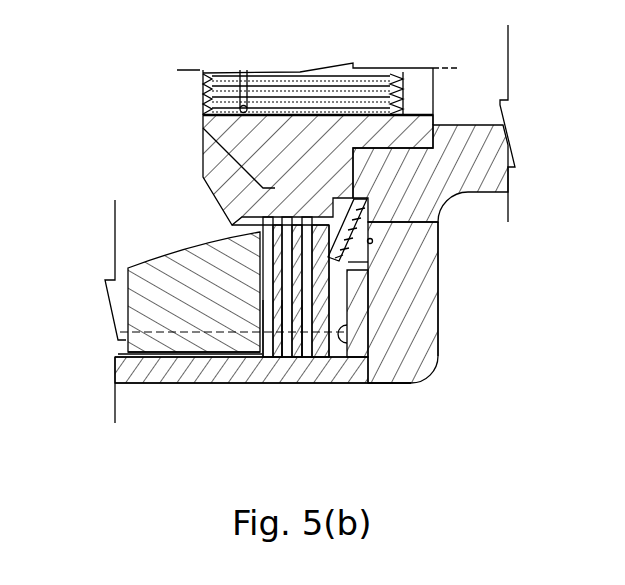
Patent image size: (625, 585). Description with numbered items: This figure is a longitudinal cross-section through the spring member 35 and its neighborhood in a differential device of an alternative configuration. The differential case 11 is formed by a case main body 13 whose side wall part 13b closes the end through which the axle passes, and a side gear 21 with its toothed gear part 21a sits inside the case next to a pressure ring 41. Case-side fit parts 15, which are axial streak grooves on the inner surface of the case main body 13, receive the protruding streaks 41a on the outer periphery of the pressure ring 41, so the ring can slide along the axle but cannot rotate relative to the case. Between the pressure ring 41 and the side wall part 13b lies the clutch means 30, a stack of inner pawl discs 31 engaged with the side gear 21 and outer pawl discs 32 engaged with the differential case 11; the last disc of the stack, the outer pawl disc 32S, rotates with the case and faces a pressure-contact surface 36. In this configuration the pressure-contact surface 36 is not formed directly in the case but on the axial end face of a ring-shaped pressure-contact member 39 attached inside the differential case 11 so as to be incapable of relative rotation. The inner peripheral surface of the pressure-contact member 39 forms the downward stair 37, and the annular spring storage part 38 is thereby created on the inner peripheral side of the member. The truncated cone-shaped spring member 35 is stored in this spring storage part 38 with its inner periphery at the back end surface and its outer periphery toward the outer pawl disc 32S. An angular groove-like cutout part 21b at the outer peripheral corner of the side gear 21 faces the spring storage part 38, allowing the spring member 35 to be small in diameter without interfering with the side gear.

The side gear 21 is at (181, 96).
The gear part 21a is at (207, 153).
The cutout part 21b is at (333, 209).
The differential case 11 is at (452, 365).
The case main body 13 is at (152, 398).
The side wall part 13b is at (442, 338).
The case-side fit part 15 is at (119, 352).
The clutch means 30 is at (340, 394).
The inner pawl disc 31 is at (242, 352).
The outer pawl disc 32 is at (317, 353).
The outer pawl disc opposed to the pressure-contact surface 32S is at (328, 297).
The spring member 35 is at (356, 219).
The pressure-contact surface 36 is at (388, 384).
The stair 37 is at (350, 262).
The spring storage part 38 is at (372, 240).
The pressure-contact member 39 is at (358, 285).
The pressure ring 41 is at (167, 272).
The protruding streak 41a is at (192, 342).